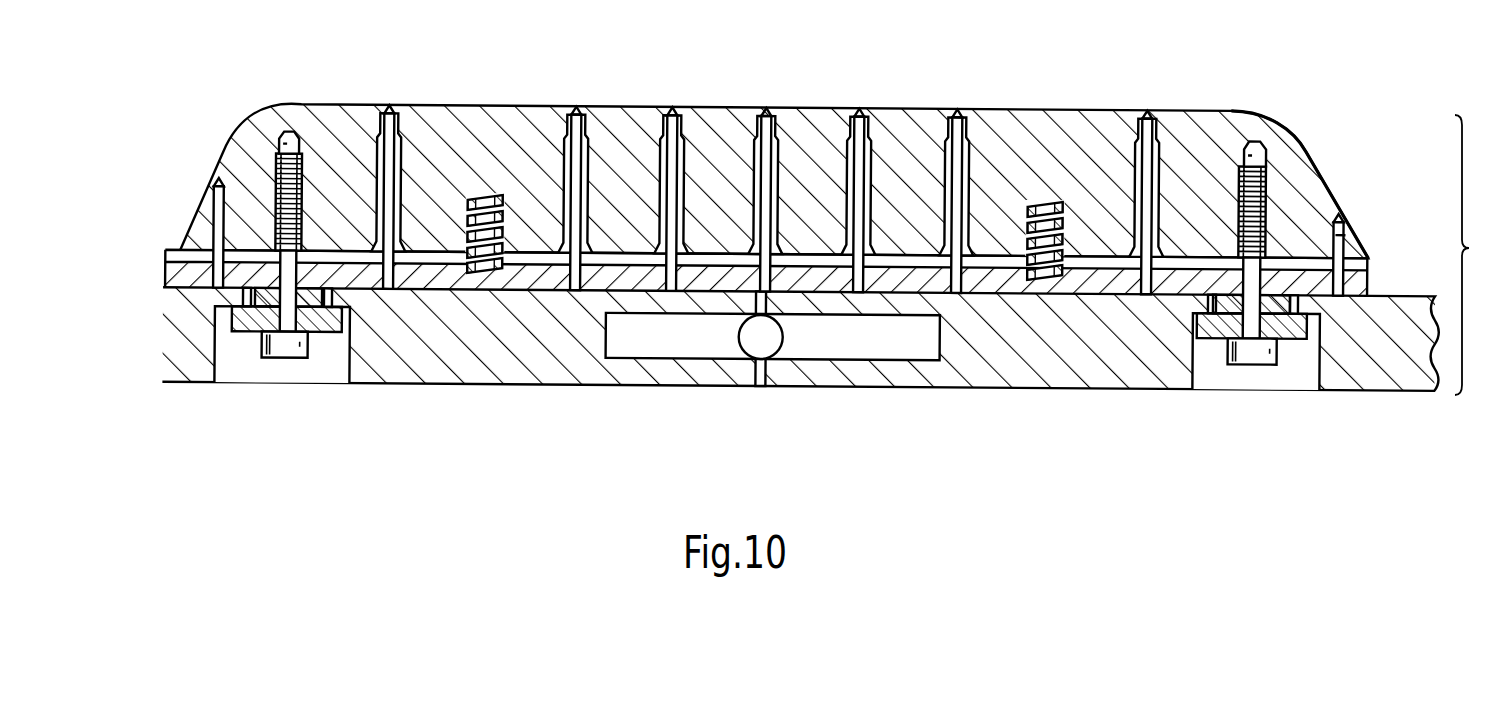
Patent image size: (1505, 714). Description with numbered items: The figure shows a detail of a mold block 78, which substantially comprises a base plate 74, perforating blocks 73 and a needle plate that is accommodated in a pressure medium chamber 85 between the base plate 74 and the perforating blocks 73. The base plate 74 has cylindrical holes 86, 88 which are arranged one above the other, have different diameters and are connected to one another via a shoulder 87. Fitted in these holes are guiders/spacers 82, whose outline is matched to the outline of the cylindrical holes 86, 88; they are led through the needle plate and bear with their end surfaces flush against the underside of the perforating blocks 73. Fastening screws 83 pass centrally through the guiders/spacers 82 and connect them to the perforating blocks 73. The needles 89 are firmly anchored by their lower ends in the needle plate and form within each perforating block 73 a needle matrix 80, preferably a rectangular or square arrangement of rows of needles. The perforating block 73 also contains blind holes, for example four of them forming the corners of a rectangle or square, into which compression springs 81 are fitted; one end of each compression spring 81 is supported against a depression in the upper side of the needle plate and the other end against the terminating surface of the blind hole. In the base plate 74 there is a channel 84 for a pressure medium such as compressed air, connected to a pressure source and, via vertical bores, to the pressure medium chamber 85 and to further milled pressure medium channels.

The perforating block 73 is at (254, 137).
The base plate 74 is at (447, 352).
The mold block 78 is at (1478, 255).
The needle matrix 80 is at (765, 106).
The compression spring 81 is at (1050, 200).
The guider/spacer 82 is at (250, 338).
The fastening screw 83 is at (1250, 363).
The channel 84 is at (668, 330).
The pressure medium chamber 85 is at (988, 265).
The cylindrical hole 86 is at (348, 356).
The shoulder 87 is at (1307, 357).
The cylindrical hole 88 is at (1207, 357).
The needle 89 is at (953, 130).